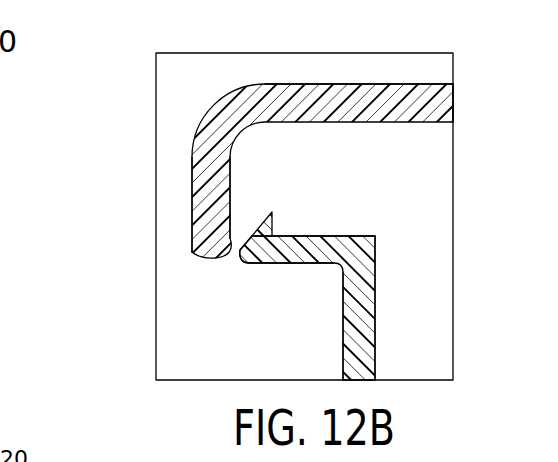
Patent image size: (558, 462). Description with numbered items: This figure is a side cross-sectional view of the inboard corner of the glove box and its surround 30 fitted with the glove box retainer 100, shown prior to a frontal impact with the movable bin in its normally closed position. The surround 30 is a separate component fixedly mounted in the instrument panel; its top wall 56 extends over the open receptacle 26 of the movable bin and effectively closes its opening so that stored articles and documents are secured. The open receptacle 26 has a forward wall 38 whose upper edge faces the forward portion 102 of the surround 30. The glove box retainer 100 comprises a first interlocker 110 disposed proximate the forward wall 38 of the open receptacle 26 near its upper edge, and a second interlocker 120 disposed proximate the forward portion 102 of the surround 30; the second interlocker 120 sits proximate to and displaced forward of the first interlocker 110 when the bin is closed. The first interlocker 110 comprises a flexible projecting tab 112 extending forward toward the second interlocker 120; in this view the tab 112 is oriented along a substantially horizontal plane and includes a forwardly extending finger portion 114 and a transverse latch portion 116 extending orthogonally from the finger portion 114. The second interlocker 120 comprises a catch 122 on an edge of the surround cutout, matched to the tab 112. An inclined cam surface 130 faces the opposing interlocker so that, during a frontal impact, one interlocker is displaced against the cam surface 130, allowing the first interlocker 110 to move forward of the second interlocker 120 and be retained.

The glove box retainer 100 is at (181, 281).
The forward portion 102 is at (217, 112).
The top wall 56 is at (375, 90).
The surround 30 is at (425, 90).
The catch 122 is at (192, 208).
The second interlocker 120 is at (192, 228).
The inclined cam surface 130 is at (203, 256).
The flexible projecting tab 112 is at (323, 247).
The transverse latch portion 116 is at (258, 228).
The forwardly extending finger portion 114 is at (290, 247).
The first interlocker 110 is at (305, 250).
The forward wall 38 is at (362, 298).
The open receptacle 26 is at (362, 365).